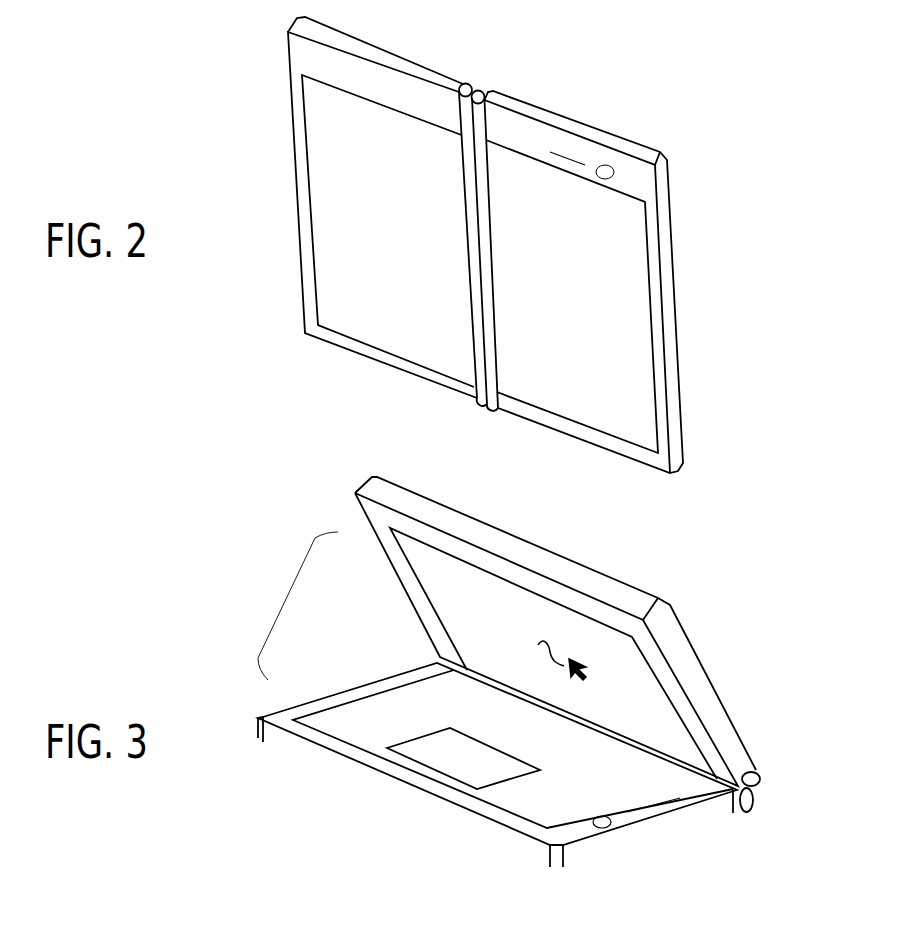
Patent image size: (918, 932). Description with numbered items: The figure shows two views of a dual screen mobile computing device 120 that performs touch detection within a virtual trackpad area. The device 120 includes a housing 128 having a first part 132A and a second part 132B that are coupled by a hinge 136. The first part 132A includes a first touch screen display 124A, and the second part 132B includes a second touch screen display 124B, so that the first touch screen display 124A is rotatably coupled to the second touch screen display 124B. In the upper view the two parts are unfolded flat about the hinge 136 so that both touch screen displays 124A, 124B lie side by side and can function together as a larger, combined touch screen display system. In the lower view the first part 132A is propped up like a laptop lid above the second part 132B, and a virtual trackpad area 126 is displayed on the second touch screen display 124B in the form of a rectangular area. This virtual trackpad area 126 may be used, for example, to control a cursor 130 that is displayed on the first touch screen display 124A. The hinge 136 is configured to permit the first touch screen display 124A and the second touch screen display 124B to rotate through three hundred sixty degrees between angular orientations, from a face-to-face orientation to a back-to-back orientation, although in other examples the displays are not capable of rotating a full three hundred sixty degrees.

In FIG. 2, the dual screen mobile computing device 120 is at (708, 58).
In FIG. 3, the dual screen mobile computing device 120 is at (733, 625).
In FIG. 2, the first touch screen display 124A is at (417, 339).
In FIG. 3, the first touch screen display 124A is at (478, 591).
In FIG. 2, the second touch screen display 124B is at (596, 403).
In FIG. 3, the second touch screen display 124B is at (637, 783).
In FIG. 3, the virtual trackpad area 126 is at (482, 740).
In FIG. 3, the housing 128 is at (287, 598).
In FIG. 3, the cursor 130 is at (544, 657).
In FIG. 3, the first part 132A is at (405, 592).
In FIG. 3, the second part 132B is at (368, 683).
In FIG. 3, the hinge 136 is at (757, 796).